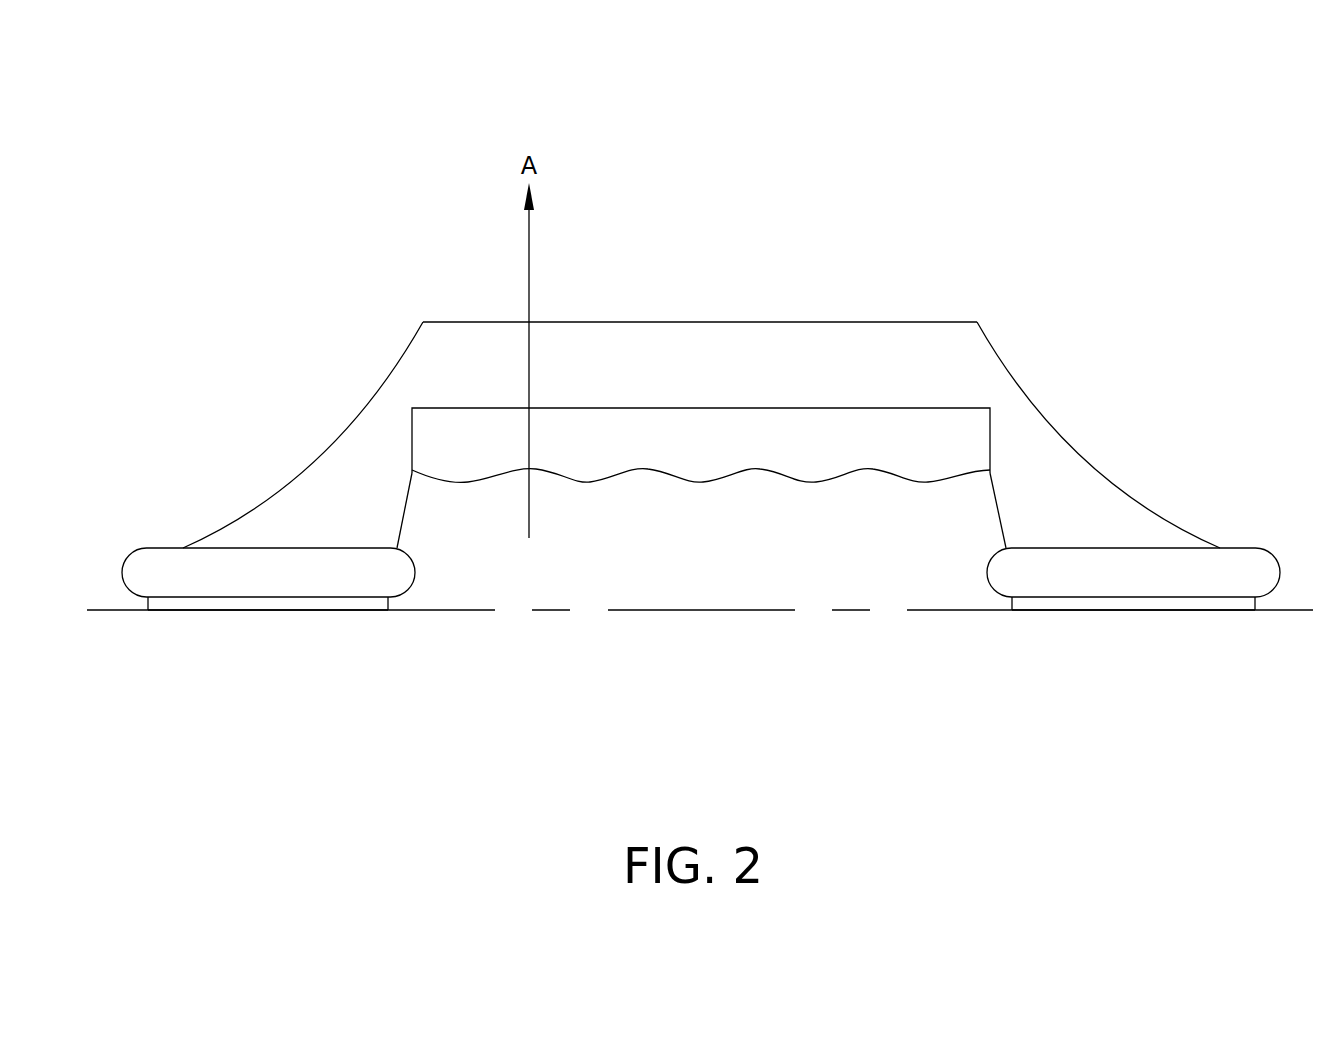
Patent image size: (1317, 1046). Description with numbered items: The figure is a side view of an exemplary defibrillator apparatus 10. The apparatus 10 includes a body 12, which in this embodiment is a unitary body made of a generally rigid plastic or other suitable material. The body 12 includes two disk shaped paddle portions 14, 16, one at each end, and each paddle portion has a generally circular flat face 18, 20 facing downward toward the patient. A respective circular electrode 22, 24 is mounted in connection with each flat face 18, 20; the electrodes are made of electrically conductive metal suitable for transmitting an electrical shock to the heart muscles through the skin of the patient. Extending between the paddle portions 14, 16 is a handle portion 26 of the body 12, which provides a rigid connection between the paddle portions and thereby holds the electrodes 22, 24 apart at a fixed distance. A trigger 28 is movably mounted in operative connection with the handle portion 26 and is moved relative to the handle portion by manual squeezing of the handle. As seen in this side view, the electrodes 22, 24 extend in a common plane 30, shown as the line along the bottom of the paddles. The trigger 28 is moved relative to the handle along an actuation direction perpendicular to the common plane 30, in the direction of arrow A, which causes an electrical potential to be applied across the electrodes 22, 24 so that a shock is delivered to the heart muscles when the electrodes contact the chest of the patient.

The defibrillator apparatus 10 is at (693, 414).
The body 12 is at (701, 368).
The paddle portion 14 is at (182, 547).
The paddle portion 16 is at (1203, 541).
The flat face 18 is at (130, 593).
The flat face 20 is at (998, 597).
The electrode 22 is at (270, 610).
The electrode 24 is at (1133, 610).
The handle portion 26 is at (700, 322).
The trigger 28 is at (693, 445).
The common plane 30 is at (1288, 610).